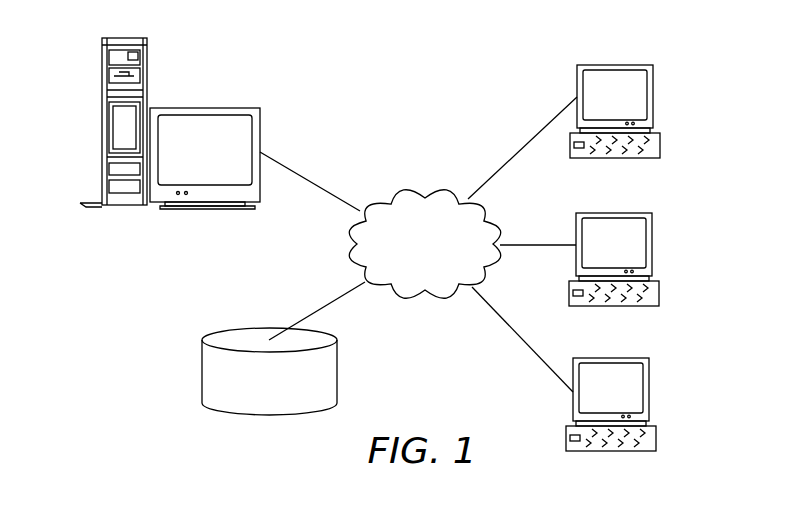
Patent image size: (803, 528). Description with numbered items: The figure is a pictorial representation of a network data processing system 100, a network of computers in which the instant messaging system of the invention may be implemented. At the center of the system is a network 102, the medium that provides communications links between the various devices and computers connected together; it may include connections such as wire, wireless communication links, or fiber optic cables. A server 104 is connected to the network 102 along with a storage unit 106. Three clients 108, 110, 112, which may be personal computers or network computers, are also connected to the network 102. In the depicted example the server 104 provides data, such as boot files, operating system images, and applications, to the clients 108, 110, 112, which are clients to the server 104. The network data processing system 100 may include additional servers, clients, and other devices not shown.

The network data processing system 100 is at (352, 75).
The network 102 is at (396, 191).
The server 104 is at (100, 125).
The storage unit 106 is at (202, 370).
The client 108 is at (654, 97).
The client 110 is at (653, 246).
The client 112 is at (650, 392).